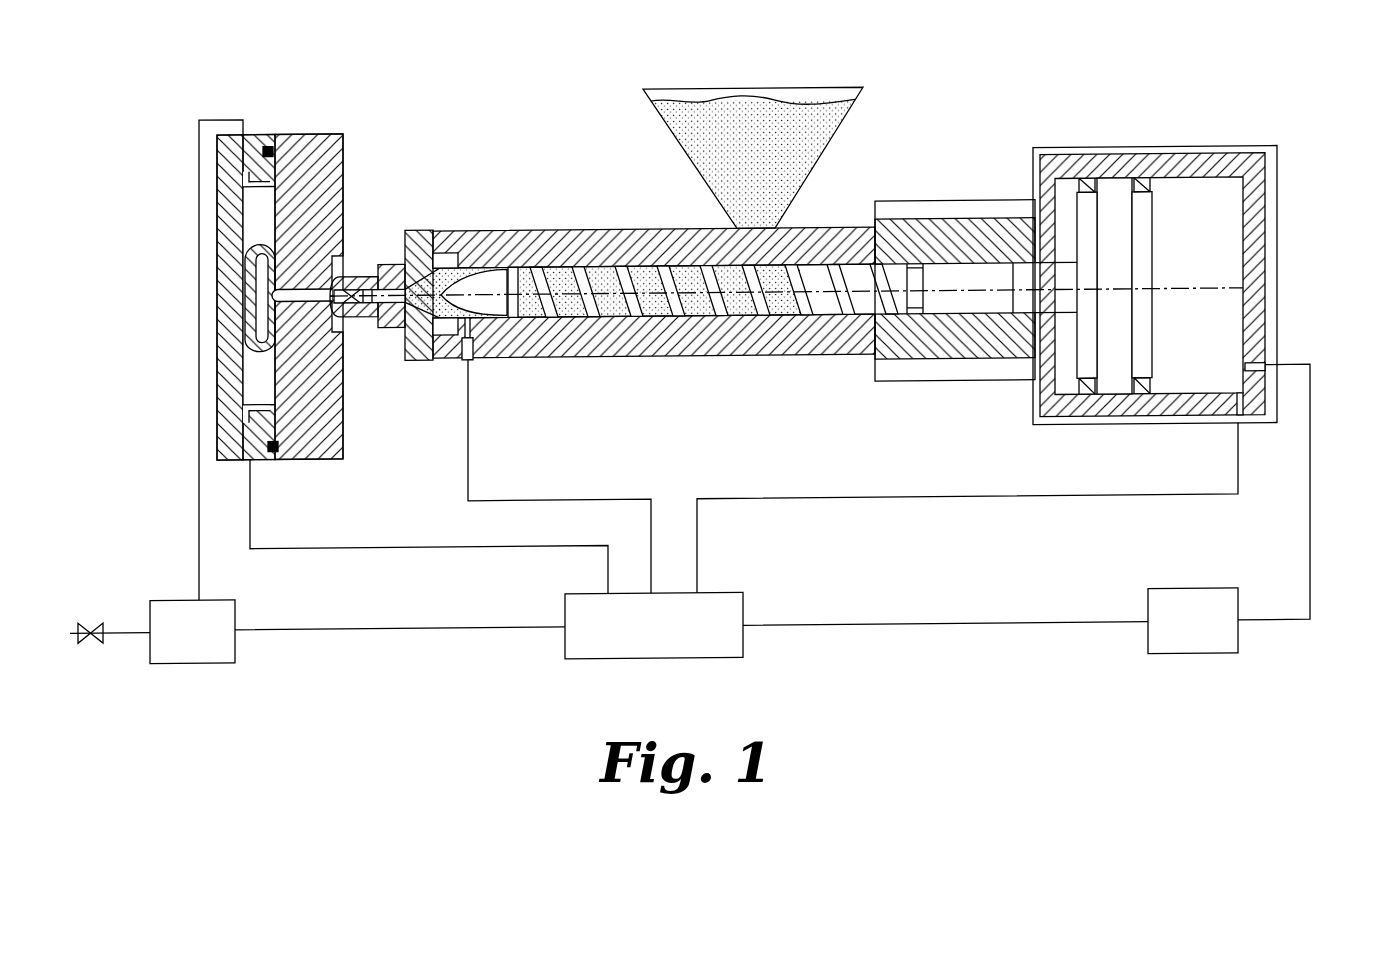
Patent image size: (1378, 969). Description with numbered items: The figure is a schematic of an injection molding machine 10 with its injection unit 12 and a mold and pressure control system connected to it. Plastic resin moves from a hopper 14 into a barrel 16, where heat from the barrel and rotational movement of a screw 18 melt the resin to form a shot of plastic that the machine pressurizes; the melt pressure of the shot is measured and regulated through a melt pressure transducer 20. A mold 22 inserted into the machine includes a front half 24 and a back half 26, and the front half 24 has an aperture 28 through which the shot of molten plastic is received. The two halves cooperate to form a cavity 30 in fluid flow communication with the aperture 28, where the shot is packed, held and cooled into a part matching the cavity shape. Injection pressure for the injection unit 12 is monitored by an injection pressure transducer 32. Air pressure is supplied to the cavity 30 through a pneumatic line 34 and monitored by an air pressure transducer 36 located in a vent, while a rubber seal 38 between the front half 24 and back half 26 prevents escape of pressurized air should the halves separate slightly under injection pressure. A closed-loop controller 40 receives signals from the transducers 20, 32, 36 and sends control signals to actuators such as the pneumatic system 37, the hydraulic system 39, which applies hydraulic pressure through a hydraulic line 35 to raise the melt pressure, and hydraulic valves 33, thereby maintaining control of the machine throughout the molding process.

The injection molding machine 10 is at (955, 89).
The injection unit 12 is at (846, 257).
The hopper 14 is at (656, 103).
The barrel 16 is at (537, 232).
The screw 18 is at (618, 232).
The melt pressure transducer 20 is at (470, 366).
The mold 22 is at (272, 323).
The front half 24 is at (333, 136).
The back half 26 is at (263, 136).
The aperture 28 is at (310, 286).
The cavity 30 is at (243, 211).
The injection pressure transducer 32 is at (1238, 452).
The hydraulic valves 33 is at (1265, 374).
The pneumatic line 34 is at (197, 202).
The hydraulic line 35 is at (1310, 444).
The air pressure transducer 36 is at (250, 463).
The pneumatic system 37 is at (235, 623).
The rubber seal 38 is at (278, 452).
The hydraulic system 39 is at (1148, 605).
The closed-loop controller 40 is at (743, 648).